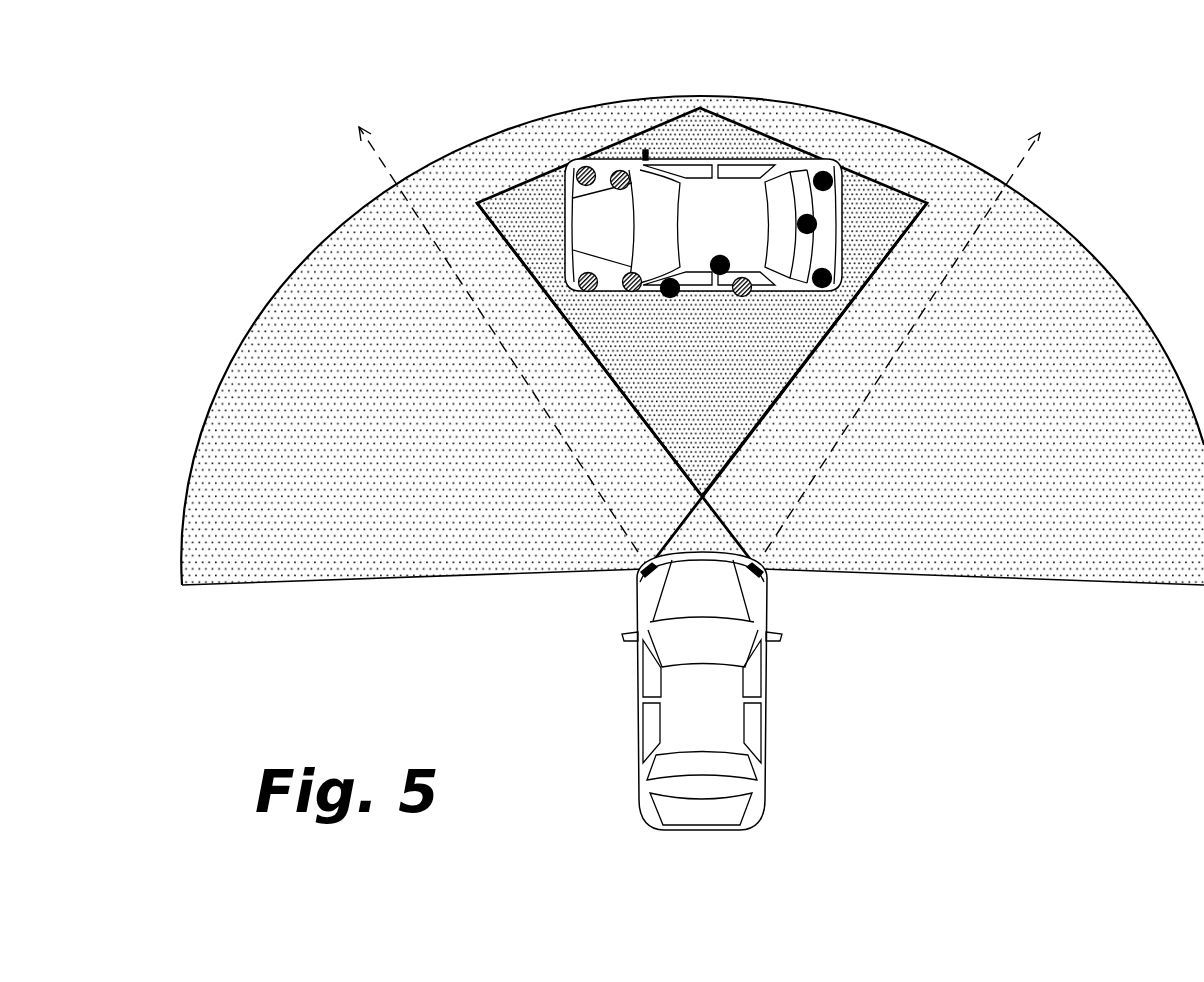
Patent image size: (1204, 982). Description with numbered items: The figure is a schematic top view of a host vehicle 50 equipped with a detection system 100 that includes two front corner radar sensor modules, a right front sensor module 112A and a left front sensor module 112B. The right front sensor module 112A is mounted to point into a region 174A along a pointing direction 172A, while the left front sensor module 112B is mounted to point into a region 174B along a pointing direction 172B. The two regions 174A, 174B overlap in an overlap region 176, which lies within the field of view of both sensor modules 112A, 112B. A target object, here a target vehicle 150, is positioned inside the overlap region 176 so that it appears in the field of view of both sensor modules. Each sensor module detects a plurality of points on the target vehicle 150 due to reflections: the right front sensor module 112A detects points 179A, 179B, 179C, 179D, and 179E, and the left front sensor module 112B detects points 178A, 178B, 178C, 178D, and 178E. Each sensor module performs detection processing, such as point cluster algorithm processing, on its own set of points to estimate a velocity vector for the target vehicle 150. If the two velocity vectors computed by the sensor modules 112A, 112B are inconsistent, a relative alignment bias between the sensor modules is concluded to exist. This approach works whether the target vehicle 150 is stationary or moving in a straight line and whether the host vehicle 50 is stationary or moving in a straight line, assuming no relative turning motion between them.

The vehicle 50 is at (768, 725).
The detection system 100 is at (738, 691).
The right front sensor module 112A is at (762, 574).
The left front sensor module 112B is at (643, 574).
The target vehicle 150 is at (719, 211).
The pointing direction 172A is at (1028, 163).
The pointing direction 172B is at (375, 152).
The region 174A is at (1067, 492).
The region 174B is at (413, 490).
The overlap region 176 is at (725, 400).
The point 178A is at (617, 170).
The point 178B is at (584, 166).
The point 178C is at (578, 283).
The point 178D is at (626, 290).
The point 178E is at (748, 294).
The point 179A is at (825, 170).
The point 179B is at (817, 227).
The point 179C is at (720, 256).
The point 179D is at (828, 285).
The point 179E is at (666, 296).